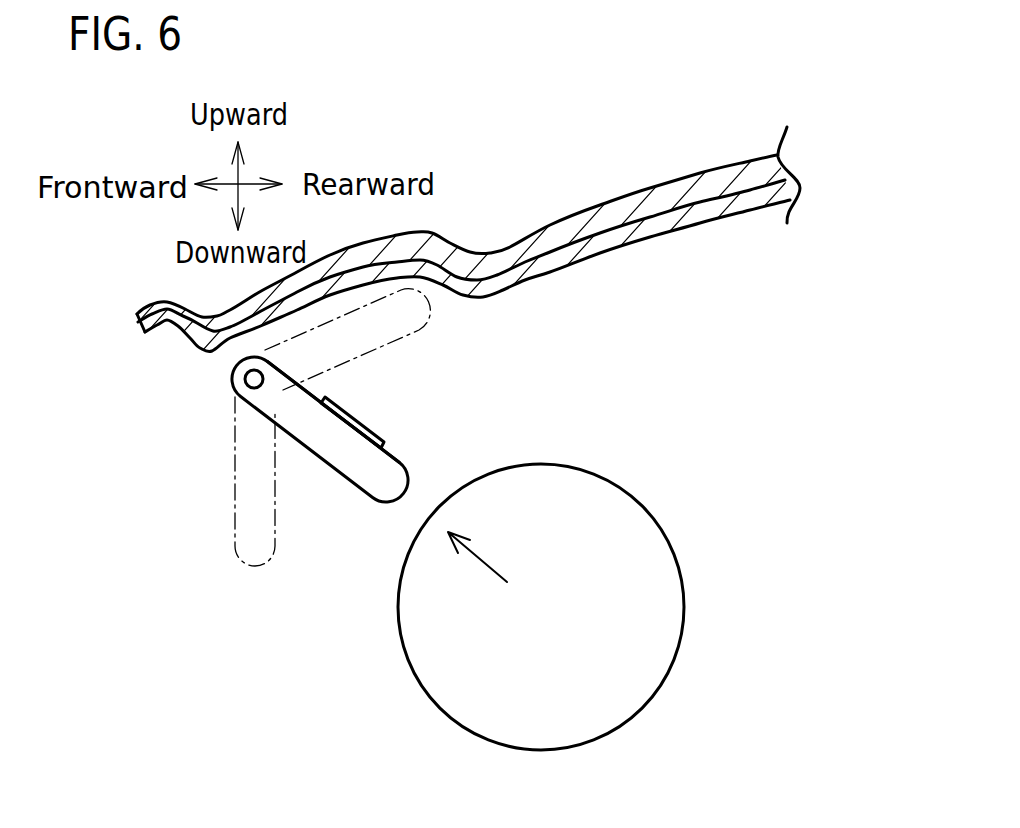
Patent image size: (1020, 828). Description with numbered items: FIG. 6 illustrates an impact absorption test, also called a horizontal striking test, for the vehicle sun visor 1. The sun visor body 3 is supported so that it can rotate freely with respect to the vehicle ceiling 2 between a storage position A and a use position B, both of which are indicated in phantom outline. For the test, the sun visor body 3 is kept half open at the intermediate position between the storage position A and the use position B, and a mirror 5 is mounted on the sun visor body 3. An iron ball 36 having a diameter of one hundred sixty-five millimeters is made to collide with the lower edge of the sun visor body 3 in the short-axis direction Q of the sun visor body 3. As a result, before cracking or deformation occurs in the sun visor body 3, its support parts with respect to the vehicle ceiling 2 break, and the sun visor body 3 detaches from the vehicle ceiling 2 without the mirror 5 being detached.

The vehicle sun visor 1 is at (317, 485).
The vehicle ceiling 2 is at (480, 296).
The sun visor body 3 is at (373, 482).
The mirror 5 is at (350, 415).
The iron ball 36 is at (633, 495).
The storage position A is at (392, 362).
The use position B is at (215, 513).
The short-axis direction Q is at (480, 551).